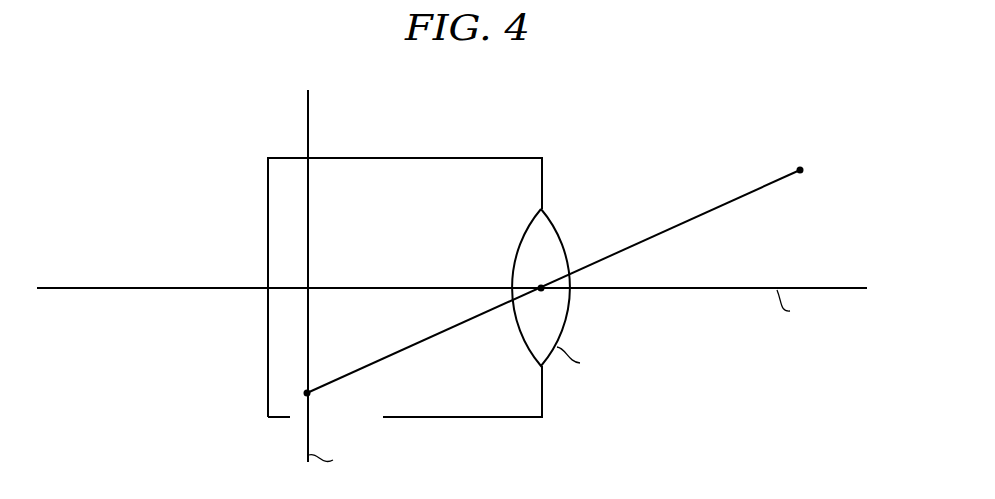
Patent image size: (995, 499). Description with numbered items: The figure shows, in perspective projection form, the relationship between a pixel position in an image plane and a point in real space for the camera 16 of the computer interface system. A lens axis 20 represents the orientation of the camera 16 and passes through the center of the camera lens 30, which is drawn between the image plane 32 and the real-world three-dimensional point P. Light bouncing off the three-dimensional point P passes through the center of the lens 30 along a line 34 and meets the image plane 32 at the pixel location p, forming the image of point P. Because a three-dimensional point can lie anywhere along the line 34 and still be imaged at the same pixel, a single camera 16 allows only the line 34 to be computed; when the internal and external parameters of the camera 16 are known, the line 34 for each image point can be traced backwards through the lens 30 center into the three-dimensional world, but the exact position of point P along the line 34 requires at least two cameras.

The camera 16 is at (458, 158).
The lens axis 20 is at (835, 289).
The camera lens 30 is at (557, 228).
The image plane 32 is at (309, 137).
The line 34 is at (722, 203).